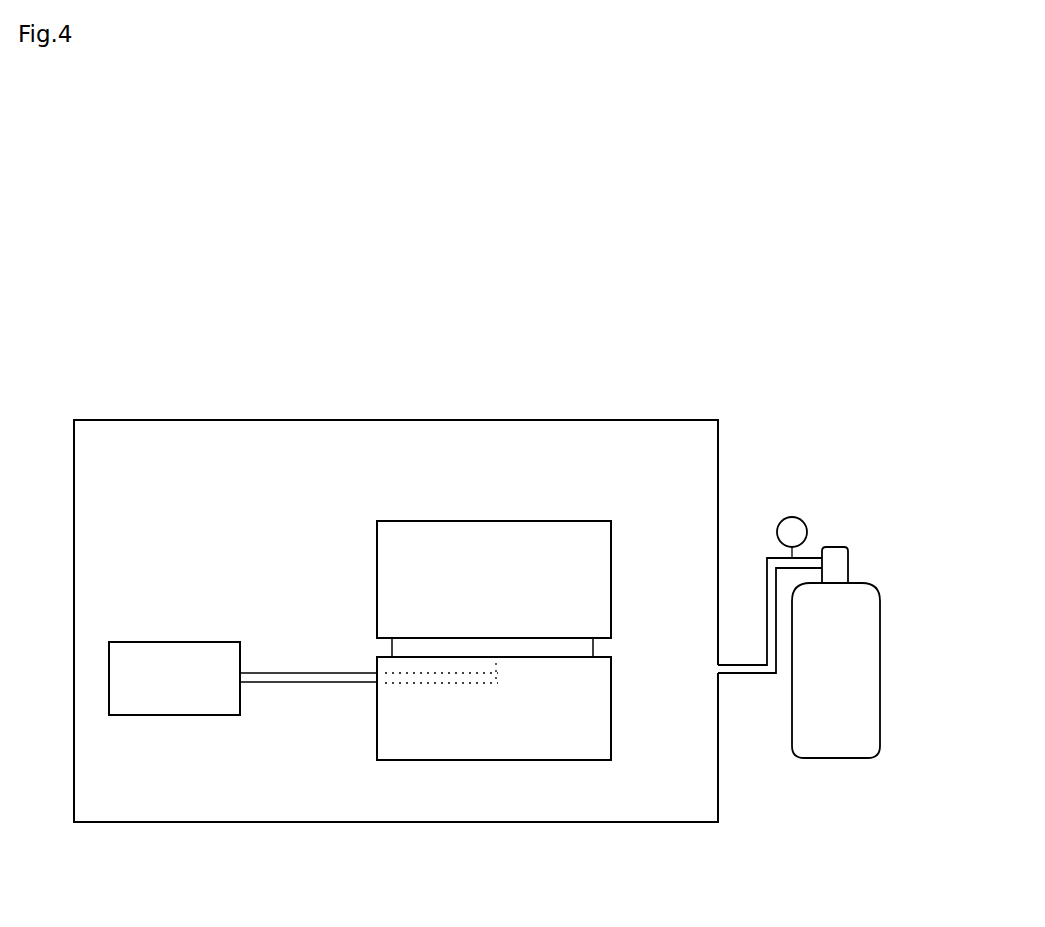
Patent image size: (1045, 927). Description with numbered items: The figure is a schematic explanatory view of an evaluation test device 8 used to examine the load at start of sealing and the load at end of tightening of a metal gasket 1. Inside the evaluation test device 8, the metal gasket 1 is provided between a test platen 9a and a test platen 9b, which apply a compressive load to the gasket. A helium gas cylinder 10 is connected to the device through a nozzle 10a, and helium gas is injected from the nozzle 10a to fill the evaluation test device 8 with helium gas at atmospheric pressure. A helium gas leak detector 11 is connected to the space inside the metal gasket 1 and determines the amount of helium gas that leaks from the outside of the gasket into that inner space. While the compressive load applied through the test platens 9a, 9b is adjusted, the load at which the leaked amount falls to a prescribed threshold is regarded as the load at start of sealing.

The metal gasket 1 is at (593, 647).
The evaluation test device 8 is at (654, 430).
The test platen 9a is at (603, 553).
The test platen 9b is at (603, 727).
The helium gas cylinder 10 is at (872, 637).
The nozzle 10a is at (745, 673).
The helium gas leak detector 11 is at (140, 710).